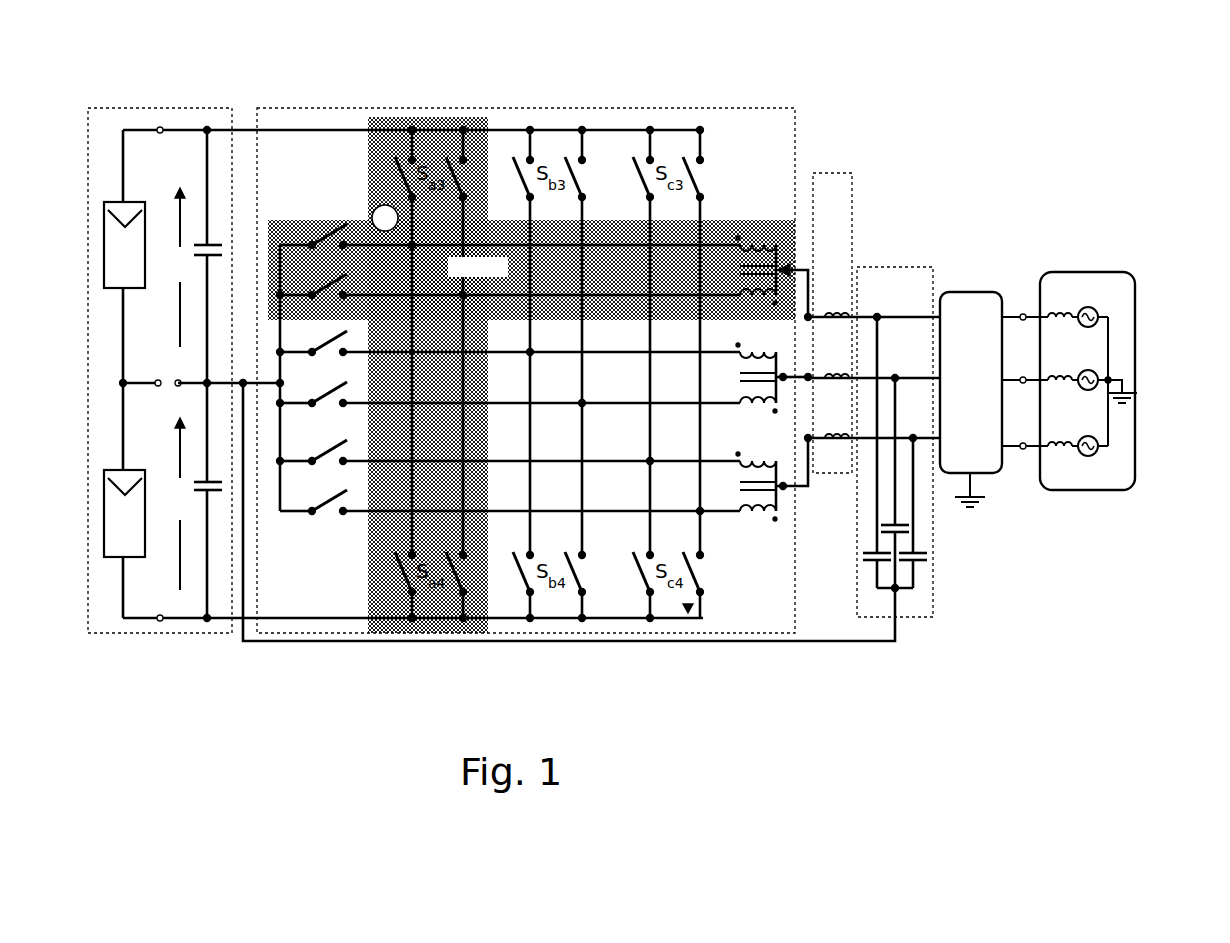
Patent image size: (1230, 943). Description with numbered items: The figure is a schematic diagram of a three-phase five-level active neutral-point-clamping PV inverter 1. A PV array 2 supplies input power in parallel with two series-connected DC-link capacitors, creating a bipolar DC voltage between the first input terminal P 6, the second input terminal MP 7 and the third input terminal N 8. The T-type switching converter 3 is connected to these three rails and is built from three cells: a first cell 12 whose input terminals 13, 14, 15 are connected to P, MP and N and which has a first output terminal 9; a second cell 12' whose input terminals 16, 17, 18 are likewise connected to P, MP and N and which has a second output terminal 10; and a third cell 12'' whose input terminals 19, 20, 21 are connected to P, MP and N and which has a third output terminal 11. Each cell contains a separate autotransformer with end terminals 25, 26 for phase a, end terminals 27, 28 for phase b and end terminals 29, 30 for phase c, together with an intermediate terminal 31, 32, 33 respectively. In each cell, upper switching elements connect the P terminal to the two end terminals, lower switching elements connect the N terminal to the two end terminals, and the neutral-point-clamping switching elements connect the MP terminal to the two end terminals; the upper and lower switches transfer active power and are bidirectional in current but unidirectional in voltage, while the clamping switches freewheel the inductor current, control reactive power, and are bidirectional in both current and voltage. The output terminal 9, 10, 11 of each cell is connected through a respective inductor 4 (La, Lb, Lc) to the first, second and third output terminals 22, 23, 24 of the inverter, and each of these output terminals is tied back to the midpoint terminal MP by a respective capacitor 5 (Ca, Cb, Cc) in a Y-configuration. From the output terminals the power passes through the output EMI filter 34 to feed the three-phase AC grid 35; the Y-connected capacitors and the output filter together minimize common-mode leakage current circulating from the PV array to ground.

The PV inverter 1 is at (716, 108).
The PV array 2 is at (179, 108).
The MSSC T-type 3 is at (596, 104).
The inductor 4 is at (848, 302).
The capacitor 5 is at (904, 598).
The first input terminal P 6 is at (239, 128).
The second input terminal MP 7 is at (222, 381).
The third input terminal N 8 is at (236, 641).
The first output terminal 9 is at (810, 306).
The second output terminal 10 is at (811, 373).
The third output terminal 11 is at (810, 443).
The first MSSC 12 is at (581, 337).
The second MSSC 12' is at (570, 298).
The third MSSC 12'' is at (694, 297).
The input terminal 13 is at (437, 129).
The input terminal 14 is at (269, 282).
The input terminal 15 is at (437, 620).
The input terminal 16 is at (554, 129).
The input terminal 17 is at (279, 386).
The input terminal 18 is at (556, 620).
The input terminal 19 is at (679, 129).
The input terminal 20 is at (279, 486).
The input terminal 21 is at (673, 620).
The first output terminal of the inverter 22 is at (877, 316).
The second output terminal of the inverter 23 is at (896, 377).
The third output terminal of the inverter 24 is at (914, 442).
The first end terminal 25 is at (713, 244).
The second end terminal 26 is at (713, 296).
The first end terminal 27 is at (715, 352).
The second end terminal 28 is at (712, 404).
The first end terminal 29 is at (713, 461).
The second end terminal 30 is at (712, 513).
The intermediate terminal 31 is at (790, 263).
The intermediate terminal 32 is at (784, 376).
The intermediate terminal 33 is at (786, 489).
The output EMI filter 34 is at (994, 293).
The grid 35 is at (1068, 275).